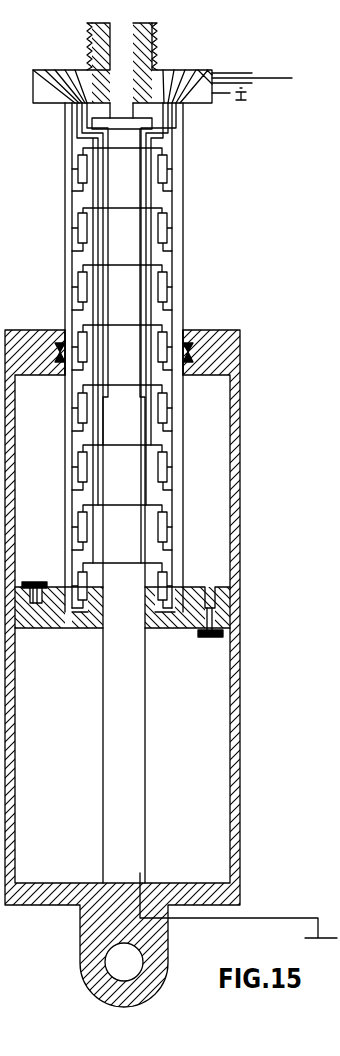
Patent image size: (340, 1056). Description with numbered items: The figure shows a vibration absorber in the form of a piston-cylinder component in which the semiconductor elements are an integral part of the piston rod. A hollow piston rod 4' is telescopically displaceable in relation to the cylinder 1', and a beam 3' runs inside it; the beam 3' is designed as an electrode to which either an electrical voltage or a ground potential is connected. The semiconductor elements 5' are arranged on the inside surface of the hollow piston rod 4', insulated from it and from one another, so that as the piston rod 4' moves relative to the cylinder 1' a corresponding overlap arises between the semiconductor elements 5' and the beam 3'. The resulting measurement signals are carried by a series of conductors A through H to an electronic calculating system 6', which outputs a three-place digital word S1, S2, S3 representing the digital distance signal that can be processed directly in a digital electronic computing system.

The cylinder 1' is at (171, 668).
The beam 3' is at (145, 506).
The piston rod 4' is at (157, 128).
The semiconductor elements 5' is at (142, 378).
The electronic calculating system 6' is at (137, 70).
The digital distance signal bit S1 is at (241, 63).
The digital distance signal bit S2 is at (262, 79).
The digital distance signal bit S3 is at (241, 93).